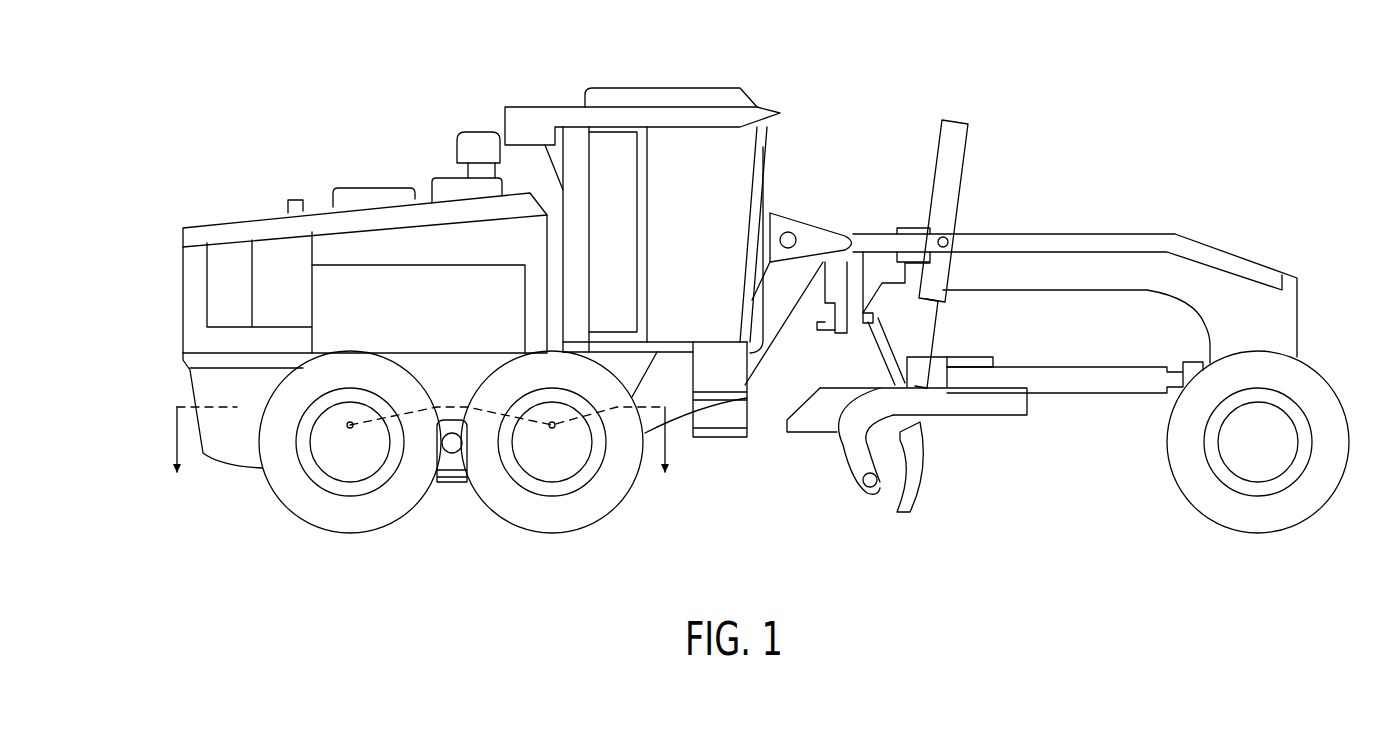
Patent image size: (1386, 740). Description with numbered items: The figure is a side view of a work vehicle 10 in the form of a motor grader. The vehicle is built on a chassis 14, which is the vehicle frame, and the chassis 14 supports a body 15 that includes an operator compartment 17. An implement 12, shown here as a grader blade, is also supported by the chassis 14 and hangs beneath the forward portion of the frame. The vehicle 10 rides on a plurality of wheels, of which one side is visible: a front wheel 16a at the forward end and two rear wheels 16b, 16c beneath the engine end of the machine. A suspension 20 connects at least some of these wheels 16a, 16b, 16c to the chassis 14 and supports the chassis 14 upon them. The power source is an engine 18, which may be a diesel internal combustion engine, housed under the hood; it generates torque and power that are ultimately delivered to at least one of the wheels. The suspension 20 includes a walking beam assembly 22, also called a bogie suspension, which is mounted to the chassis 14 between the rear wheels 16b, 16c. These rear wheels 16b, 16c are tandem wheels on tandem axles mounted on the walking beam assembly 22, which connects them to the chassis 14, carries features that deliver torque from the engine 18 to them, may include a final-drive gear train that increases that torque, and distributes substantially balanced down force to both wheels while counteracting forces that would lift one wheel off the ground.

The work vehicle 10 is at (274, 108).
The implement 12 is at (936, 471).
The chassis 14 is at (401, 338).
The body 15 is at (581, 248).
The front wheel 16a is at (1255, 517).
The rear wheel 16b is at (535, 520).
The rear wheel 16c is at (340, 518).
The operator compartment 17 is at (723, 156).
The engine 18 is at (329, 300).
The suspension 20 is at (461, 389).
The walking beam assembly 22 is at (446, 447).